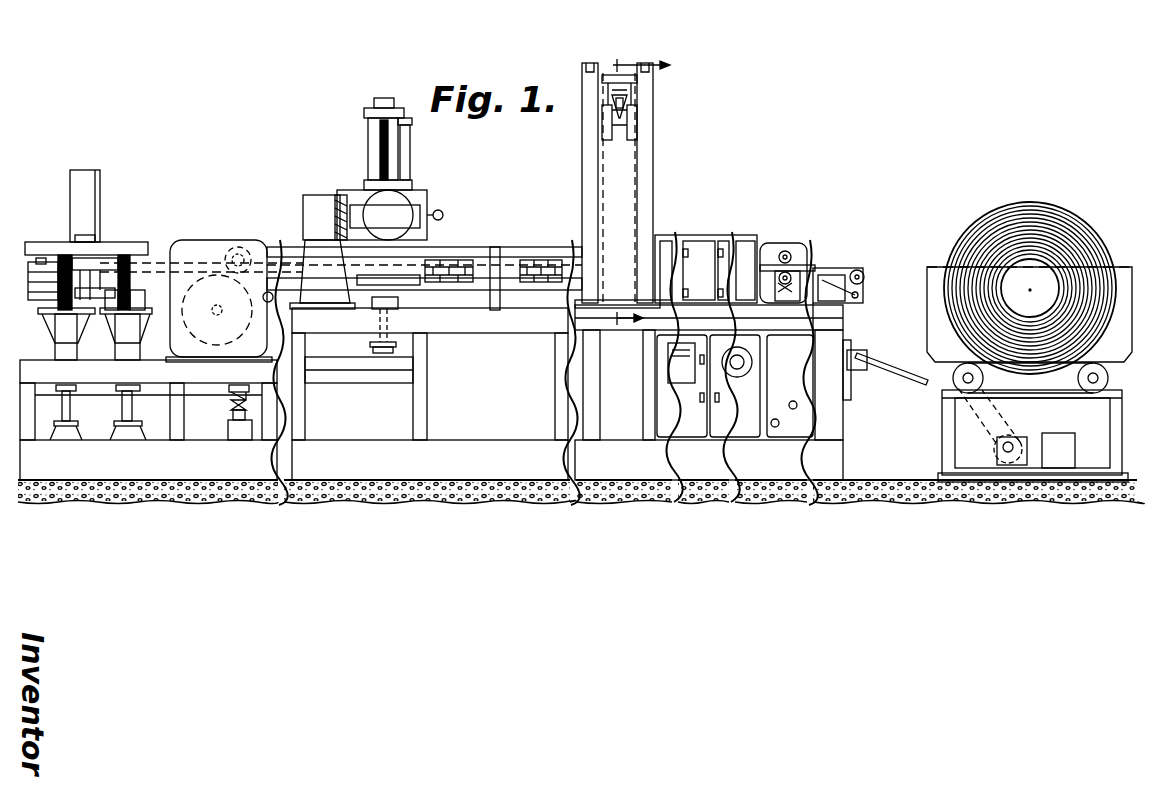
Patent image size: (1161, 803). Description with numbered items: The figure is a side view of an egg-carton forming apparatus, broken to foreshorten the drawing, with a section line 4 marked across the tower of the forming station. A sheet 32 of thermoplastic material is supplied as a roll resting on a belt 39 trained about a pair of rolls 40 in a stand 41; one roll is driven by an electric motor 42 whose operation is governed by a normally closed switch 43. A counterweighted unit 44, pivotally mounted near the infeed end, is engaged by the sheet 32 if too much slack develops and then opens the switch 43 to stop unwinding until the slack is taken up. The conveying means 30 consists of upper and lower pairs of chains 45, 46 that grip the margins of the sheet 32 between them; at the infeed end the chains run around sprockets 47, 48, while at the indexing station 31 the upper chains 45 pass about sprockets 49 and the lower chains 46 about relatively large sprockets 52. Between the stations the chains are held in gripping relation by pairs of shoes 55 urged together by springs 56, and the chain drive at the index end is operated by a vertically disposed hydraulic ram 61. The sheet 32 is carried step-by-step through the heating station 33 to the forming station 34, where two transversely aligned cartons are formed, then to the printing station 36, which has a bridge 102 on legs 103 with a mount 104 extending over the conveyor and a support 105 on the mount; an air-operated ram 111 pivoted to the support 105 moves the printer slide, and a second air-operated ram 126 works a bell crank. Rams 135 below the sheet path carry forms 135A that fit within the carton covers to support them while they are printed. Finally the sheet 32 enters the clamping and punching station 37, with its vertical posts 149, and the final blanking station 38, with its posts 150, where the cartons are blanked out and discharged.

The section line 4- 4 is at (649, 194).
The conveying means 30 is at (283, 260).
The indexing station 31 is at (210, 240).
The sheet 32 is at (877, 297).
The heating station 33 is at (704, 232).
The forming station 34 is at (655, 197).
The printing station 36 is at (422, 194).
The clamping and punching station 37 is at (128, 238).
The final station 38 is at (48, 240).
The belt 39 is at (1064, 394).
The rolls 40 is at (955, 382).
The stand 41 is at (1098, 474).
The electric motor 42 is at (1050, 455).
The switch 43 is at (860, 372).
The counterweighted unit 44 is at (908, 385).
The upper chains 45 is at (772, 251).
The lower chains 46 is at (762, 307).
The sprockets 47 is at (805, 245).
The sprockets 48 is at (833, 317).
The sprockets 49 is at (235, 250).
The sprockets 52 is at (218, 360).
The shoes 55 is at (452, 265).
The springs 56 is at (530, 268).
The hydraulic ram 61 is at (248, 395).
The bridge 102 is at (310, 204).
The legs 103 is at (330, 298).
The mount 104 is at (358, 194).
The support 105 is at (368, 150).
The air-operated ram 111 is at (370, 130).
The air operated ram 126 is at (408, 162).
The rams 135 is at (378, 354).
The forms 135A is at (406, 285).
The posts 149 is at (127, 410).
The posts 150 is at (63, 410).